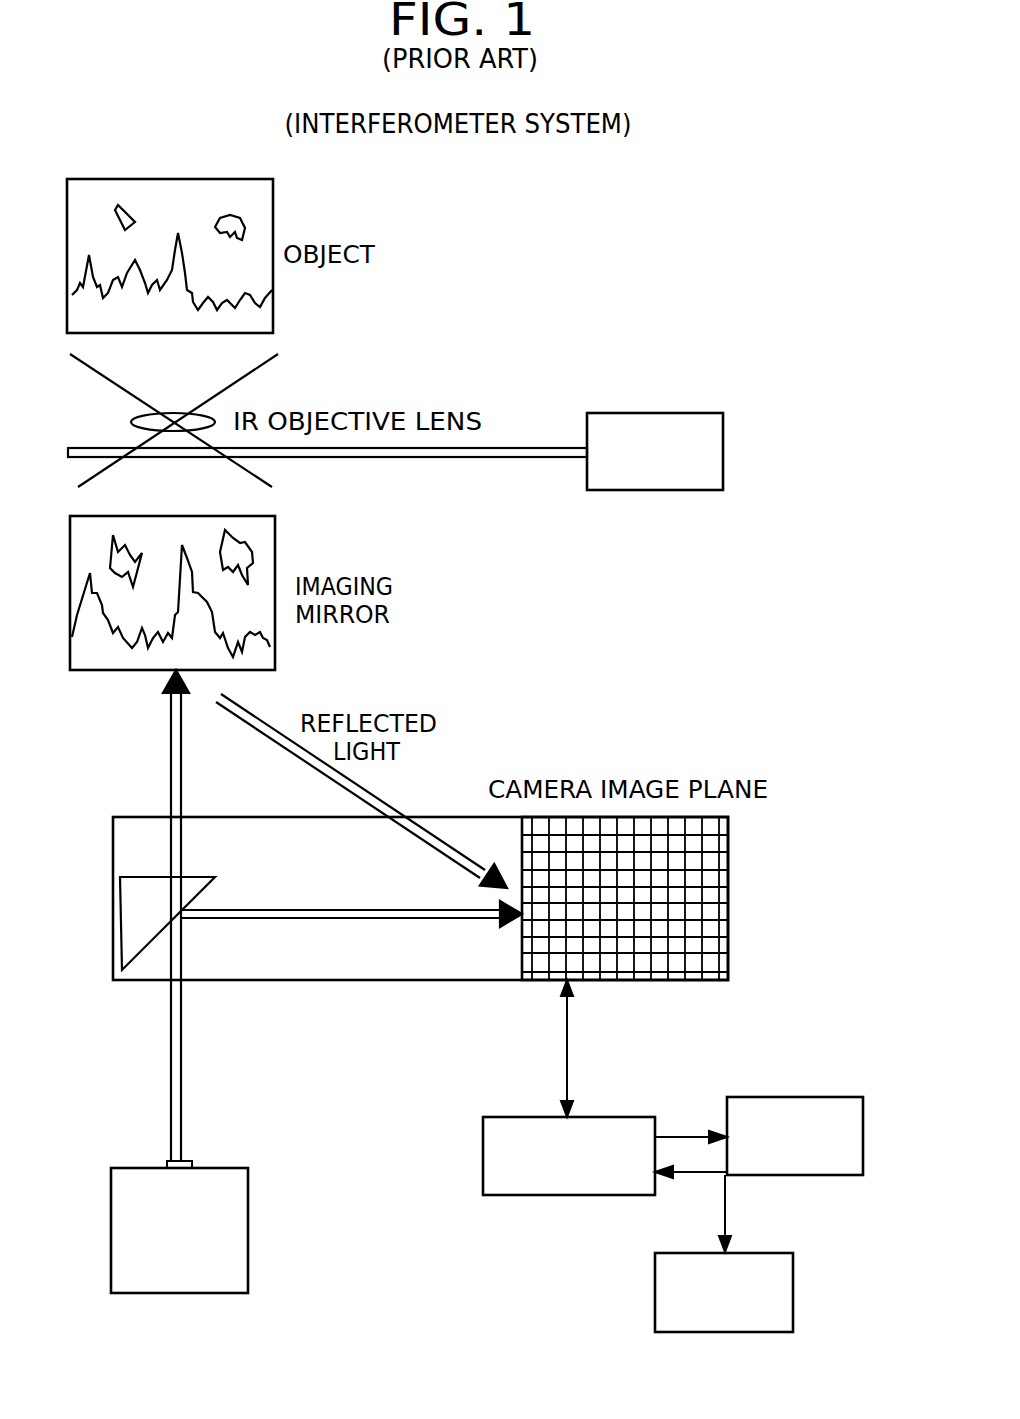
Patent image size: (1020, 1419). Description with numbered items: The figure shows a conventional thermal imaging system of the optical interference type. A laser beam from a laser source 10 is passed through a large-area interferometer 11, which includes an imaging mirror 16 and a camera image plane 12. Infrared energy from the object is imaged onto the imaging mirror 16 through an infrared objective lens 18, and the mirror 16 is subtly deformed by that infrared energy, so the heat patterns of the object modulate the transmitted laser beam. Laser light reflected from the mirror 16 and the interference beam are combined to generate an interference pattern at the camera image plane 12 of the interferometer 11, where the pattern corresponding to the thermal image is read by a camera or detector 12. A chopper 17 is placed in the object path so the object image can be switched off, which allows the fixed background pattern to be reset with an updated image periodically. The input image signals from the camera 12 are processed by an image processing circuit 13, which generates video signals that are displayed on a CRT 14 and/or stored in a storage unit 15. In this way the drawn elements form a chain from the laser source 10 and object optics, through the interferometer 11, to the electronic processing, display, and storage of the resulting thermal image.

The laser source 10 is at (233, 1192).
The large-area interferometer 11 is at (122, 858).
The camera image plane 12 is at (707, 913).
The image processing circuit 13 is at (617, 1132).
The CRT 14 is at (842, 1117).
The storage unit 15 is at (780, 1278).
The imaging mirror 16 is at (250, 552).
The chopper 17 is at (703, 425).
The infrared objective lens 18 is at (130, 422).